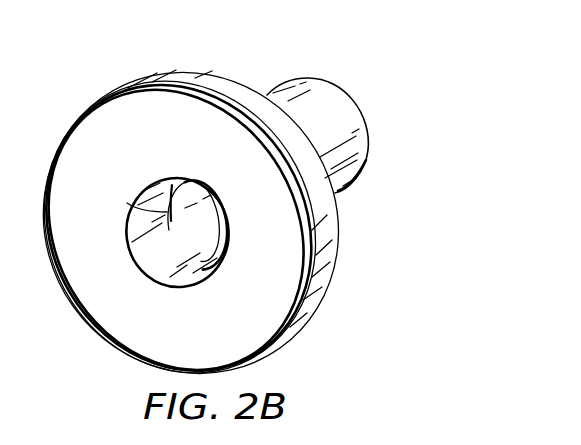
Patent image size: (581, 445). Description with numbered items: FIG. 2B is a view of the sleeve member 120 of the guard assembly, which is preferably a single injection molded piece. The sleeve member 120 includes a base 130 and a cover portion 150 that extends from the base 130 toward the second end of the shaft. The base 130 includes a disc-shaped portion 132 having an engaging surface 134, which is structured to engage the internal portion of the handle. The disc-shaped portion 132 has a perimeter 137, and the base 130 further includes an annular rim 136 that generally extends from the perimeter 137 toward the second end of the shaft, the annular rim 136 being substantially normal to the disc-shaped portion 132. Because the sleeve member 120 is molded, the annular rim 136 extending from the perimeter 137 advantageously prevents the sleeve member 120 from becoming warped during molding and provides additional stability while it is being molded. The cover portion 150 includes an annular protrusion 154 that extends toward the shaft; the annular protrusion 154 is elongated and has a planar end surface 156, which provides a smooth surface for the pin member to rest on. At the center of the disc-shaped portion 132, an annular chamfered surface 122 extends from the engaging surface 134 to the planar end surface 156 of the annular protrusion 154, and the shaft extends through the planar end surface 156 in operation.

The sleeve member 120 is at (389, 318).
The annular chamfered surface 122 is at (167, 252).
The base 130 is at (181, 57).
The disc-shaped portion 132 is at (50, 134).
The engaging surface 134 is at (282, 245).
The annular rim 136 is at (302, 344).
The perimeter 137 is at (103, 101).
The cover portion 150 is at (326, 69).
The annular protrusion 154 is at (208, 218).
The planar end surface 156 is at (137, 213).